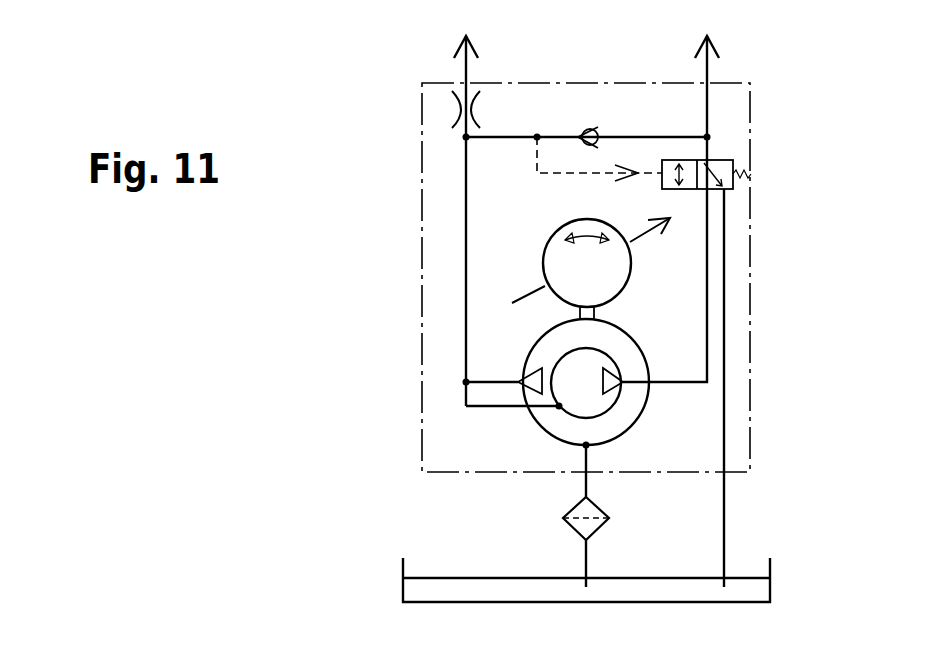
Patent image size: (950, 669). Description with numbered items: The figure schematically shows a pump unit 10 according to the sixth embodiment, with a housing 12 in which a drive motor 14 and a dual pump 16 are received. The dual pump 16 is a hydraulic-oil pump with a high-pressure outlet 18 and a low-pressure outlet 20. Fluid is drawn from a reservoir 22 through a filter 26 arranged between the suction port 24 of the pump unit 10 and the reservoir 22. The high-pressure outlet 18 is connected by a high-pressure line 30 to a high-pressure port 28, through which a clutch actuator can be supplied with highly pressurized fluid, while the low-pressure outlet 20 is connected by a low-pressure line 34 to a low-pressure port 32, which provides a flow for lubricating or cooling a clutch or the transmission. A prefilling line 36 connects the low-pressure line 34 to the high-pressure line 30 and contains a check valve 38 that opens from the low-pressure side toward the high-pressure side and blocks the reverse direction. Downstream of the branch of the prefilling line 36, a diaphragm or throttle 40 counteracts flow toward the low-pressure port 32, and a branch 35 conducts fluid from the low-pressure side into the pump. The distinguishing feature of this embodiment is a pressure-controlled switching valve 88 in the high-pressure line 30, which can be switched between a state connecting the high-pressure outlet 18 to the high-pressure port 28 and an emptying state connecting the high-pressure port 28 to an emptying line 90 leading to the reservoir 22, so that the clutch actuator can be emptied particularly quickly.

The pump unit 10 is at (815, 63).
The housing 12 is at (750, 249).
The drive motor 14 is at (633, 270).
The dual pump 16 is at (633, 331).
The high-pressure outlet 18 is at (623, 386).
The low-pressure outlet 20 is at (518, 370).
The reservoir 22 is at (770, 566).
The suction port 24 is at (590, 476).
The filter 26 is at (565, 540).
The high-pressure port 28 is at (707, 83).
The high-pressure line 30 is at (707, 348).
The low-pressure port 32 is at (466, 83).
The low-pressure line 34 is at (466, 272).
The branch 35 is at (494, 410).
The prefilling line 36 is at (505, 139).
The check valve 38 is at (597, 129).
The diaphragm or throttle 40 is at (446, 108).
The pressure-controlled switching valve 88 is at (722, 160).
The emptying line 90 is at (724, 450).